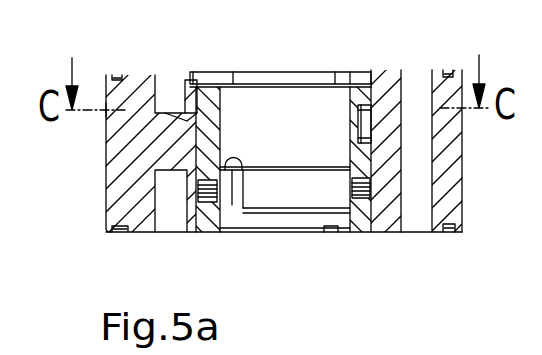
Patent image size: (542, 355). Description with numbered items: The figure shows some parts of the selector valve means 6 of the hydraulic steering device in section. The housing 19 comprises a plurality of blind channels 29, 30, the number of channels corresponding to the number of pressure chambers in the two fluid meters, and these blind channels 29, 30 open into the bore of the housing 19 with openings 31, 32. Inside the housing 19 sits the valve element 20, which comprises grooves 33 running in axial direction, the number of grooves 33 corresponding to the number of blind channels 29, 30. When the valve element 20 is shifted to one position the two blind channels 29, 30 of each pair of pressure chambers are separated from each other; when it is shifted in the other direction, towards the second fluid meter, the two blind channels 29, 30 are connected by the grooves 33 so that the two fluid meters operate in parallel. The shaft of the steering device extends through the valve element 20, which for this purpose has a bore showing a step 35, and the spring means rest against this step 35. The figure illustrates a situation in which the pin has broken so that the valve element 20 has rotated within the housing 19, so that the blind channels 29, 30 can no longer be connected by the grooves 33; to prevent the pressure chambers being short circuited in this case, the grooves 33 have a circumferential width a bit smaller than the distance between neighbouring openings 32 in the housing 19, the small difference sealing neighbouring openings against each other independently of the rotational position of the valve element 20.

The selector valve means 6 is at (68, 146).
The housing 19 is at (120, 185).
The valve element 20 is at (205, 100).
The blind channel 29 is at (173, 213).
The blind channel 30 is at (165, 87).
The opening 31 is at (192, 157).
The opening 32 is at (187, 97).
The groove 33 is at (378, 84).
The step 35 is at (246, 172).